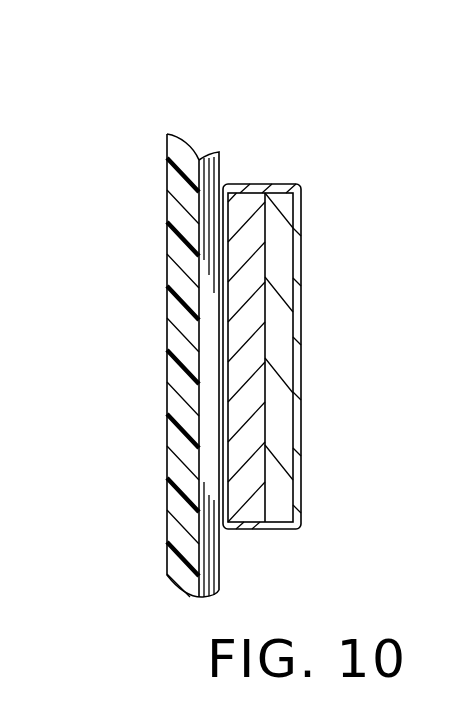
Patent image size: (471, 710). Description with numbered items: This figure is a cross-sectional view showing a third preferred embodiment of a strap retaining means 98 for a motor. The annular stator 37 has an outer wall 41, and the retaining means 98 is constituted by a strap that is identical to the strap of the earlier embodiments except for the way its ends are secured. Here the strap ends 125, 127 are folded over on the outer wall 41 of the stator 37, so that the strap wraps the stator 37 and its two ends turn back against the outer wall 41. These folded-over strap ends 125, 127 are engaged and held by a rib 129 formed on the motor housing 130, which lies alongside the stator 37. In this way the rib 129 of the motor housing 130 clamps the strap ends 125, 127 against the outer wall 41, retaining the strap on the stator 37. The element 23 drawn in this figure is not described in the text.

The panel assembly 98 is at (240, 155).
The channel frame top wall 125 is at (279, 186).
The hatched panel strip 130 is at (185, 248).
The core member 37 is at (250, 289).
The joint interface 41 is at (222, 319).
The vertical band layer 129 is at (208, 370).
The shell / side wall 23 is at (302, 360).
The channel frame bottom wall 127 is at (278, 525).